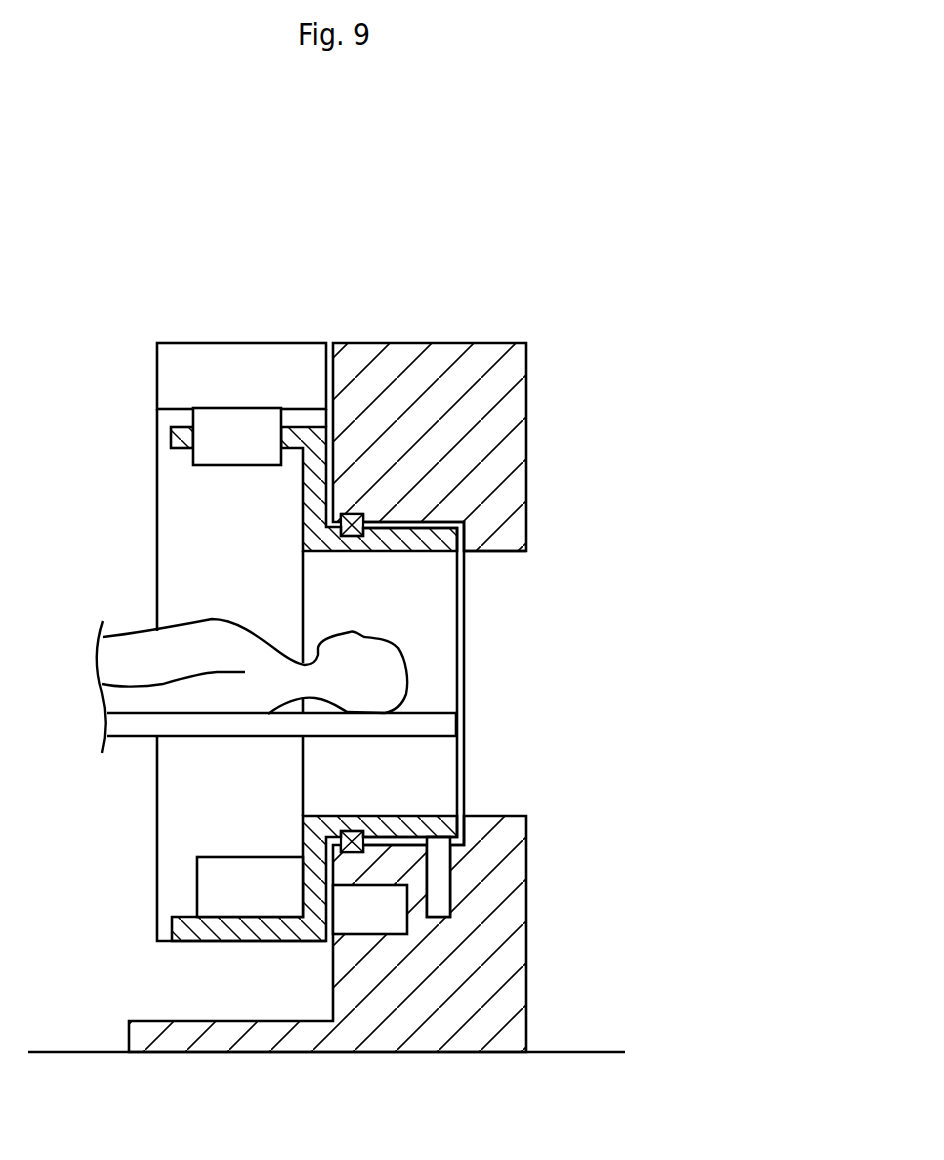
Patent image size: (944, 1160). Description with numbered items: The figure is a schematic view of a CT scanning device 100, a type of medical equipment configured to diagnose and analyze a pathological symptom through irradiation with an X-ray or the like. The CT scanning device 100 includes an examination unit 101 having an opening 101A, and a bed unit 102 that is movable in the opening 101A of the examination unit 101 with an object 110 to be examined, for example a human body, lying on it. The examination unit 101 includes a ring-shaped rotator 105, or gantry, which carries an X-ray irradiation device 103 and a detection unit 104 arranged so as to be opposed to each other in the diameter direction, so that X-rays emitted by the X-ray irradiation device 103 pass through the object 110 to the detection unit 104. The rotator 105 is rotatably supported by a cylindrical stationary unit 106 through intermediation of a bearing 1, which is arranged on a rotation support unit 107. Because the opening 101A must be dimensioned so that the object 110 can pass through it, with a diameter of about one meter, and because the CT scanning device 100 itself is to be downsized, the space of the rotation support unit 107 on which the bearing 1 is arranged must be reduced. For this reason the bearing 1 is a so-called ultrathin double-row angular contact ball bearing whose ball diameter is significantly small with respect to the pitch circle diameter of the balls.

The CT scanning device 100 is at (301, 245).
The examination unit 101 is at (376, 318).
The opening 101A is at (493, 552).
The stationary unit 106 is at (485, 360).
The rotation support unit 107 is at (355, 500).
The bearing 1 is at (358, 512).
The rotator 105 is at (157, 517).
The X-ray irradiation device 103 is at (238, 427).
The detection unit 104 is at (247, 905).
The bed unit 102 is at (443, 725).
The object to be examined 110 is at (177, 626).